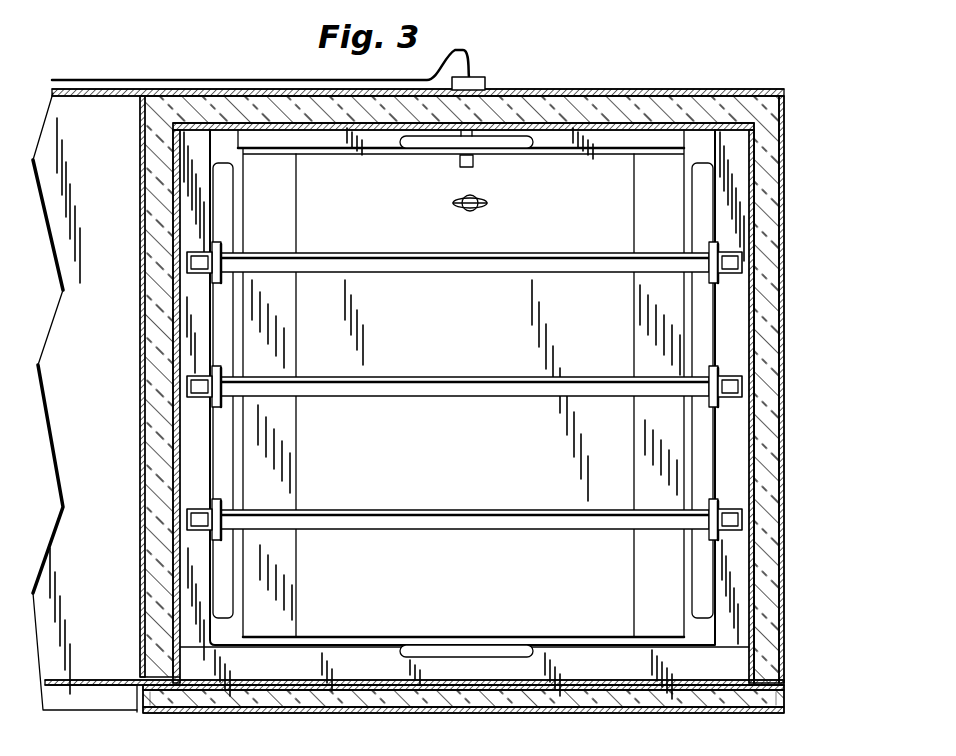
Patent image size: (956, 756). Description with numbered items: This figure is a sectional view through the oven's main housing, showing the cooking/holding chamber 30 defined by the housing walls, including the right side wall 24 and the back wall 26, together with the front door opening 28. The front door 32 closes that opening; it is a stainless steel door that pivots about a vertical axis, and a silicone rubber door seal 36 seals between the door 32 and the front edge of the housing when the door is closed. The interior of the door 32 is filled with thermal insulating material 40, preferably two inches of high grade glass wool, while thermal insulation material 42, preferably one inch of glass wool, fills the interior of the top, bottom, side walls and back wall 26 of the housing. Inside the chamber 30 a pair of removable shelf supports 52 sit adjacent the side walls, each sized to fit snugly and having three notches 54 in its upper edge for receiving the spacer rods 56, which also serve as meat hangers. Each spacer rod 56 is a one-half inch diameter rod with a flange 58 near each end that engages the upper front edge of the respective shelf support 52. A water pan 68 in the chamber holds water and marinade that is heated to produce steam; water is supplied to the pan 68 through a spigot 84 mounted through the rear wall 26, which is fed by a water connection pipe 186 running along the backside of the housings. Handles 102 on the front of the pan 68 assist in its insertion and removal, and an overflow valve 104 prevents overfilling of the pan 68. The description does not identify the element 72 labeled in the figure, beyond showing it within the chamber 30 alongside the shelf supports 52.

The right side wall 24 is at (790, 348).
The back wall 26 is at (604, 92).
The front door opening 28 is at (740, 664).
The cooking/holding chamber 30 is at (651, 180).
The front door 32 is at (325, 712).
The door seal 36 is at (605, 690).
The thermal insulating material 40 is at (246, 698).
The thermal insulation material 42 is at (757, 172).
The shelf support 52 is at (737, 438).
The notch 54 is at (200, 272).
The spacer rod 56 is at (458, 270).
The flange 58 is at (216, 250).
The water pan 68 is at (556, 136).
The side bracket 72 is at (218, 192).
The spigot 84 is at (473, 162).
The handle 102 is at (407, 144).
The overflow valve 104 is at (478, 210).
The water connection pipe 186 is at (215, 85).